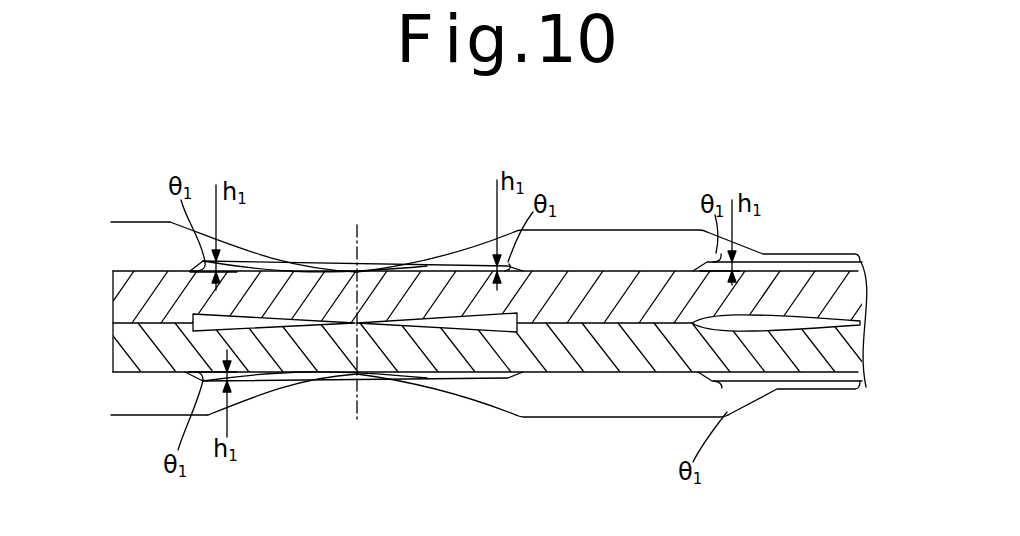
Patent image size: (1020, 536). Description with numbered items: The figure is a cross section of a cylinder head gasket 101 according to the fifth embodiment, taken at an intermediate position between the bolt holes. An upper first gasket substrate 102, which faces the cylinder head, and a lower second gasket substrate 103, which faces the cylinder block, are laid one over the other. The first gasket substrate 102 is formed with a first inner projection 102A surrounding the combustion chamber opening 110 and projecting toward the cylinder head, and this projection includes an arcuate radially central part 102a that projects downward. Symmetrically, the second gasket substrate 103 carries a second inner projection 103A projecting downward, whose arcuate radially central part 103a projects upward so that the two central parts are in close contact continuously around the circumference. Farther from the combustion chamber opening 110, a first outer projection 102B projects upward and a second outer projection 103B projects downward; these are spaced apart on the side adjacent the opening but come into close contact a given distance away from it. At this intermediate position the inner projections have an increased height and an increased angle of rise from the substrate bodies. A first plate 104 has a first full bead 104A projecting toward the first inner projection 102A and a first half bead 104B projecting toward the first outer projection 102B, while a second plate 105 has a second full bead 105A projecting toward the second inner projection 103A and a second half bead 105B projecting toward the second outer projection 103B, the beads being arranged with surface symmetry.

The cylinder head gasket 101 is at (805, 254).
The first gasket substrate 102 is at (831, 290).
The second gasket substrate 103 is at (840, 356).
The first inner projection 102A is at (240, 263).
The first outer projection 102B is at (746, 262).
The radially central part 102a is at (376, 326).
The second inner projection 103A is at (263, 379).
The second outer projection 103B is at (743, 387).
The radially central part 103a is at (345, 318).
The first plate 104 is at (587, 230).
The first full bead 104A is at (453, 246).
The first half bead 104B is at (763, 254).
The second plate 105 is at (553, 418).
The second full bead 105A is at (470, 403).
The second half bead 105B is at (735, 418).
The combustion chamber opening 110 is at (111, 222).